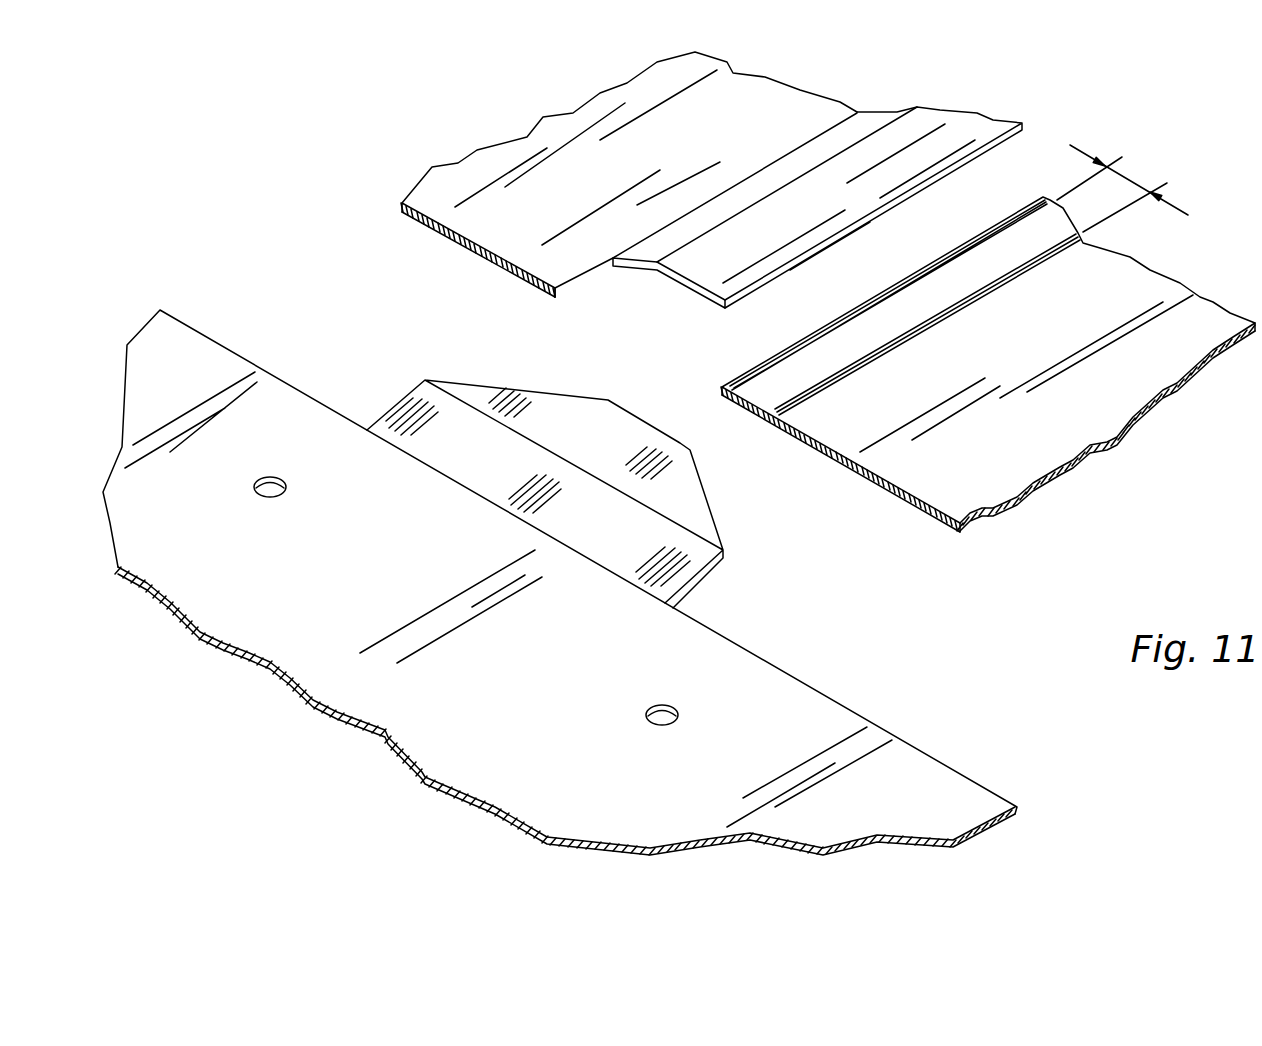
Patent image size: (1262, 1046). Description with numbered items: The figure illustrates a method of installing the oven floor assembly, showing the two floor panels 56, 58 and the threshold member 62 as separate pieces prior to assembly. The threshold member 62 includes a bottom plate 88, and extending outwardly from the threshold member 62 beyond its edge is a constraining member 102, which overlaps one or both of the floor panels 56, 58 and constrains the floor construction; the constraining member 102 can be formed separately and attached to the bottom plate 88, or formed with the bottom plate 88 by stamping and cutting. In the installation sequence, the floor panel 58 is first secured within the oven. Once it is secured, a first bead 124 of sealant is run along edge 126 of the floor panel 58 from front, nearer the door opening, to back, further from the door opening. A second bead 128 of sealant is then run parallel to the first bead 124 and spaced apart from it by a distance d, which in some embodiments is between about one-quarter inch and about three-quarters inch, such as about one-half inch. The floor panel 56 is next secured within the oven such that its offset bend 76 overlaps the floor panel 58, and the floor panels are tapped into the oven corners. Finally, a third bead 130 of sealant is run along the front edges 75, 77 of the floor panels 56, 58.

The floor panel 56 is at (547, 132).
The offset bend 76 is at (920, 140).
The front edge 75 is at (500, 263).
The third bead 130 is at (435, 230).
The floor panel 58 is at (1168, 327).
The front edge 77 is at (865, 478).
The first bead 124 is at (993, 232).
The edge 126 is at (885, 296).
The second bead 128 is at (1023, 268).
The distance d is at (1133, 181).
The threshold member 62 is at (297, 622).
The bottom plate 88 is at (510, 728).
The constraining member 102 is at (618, 435).